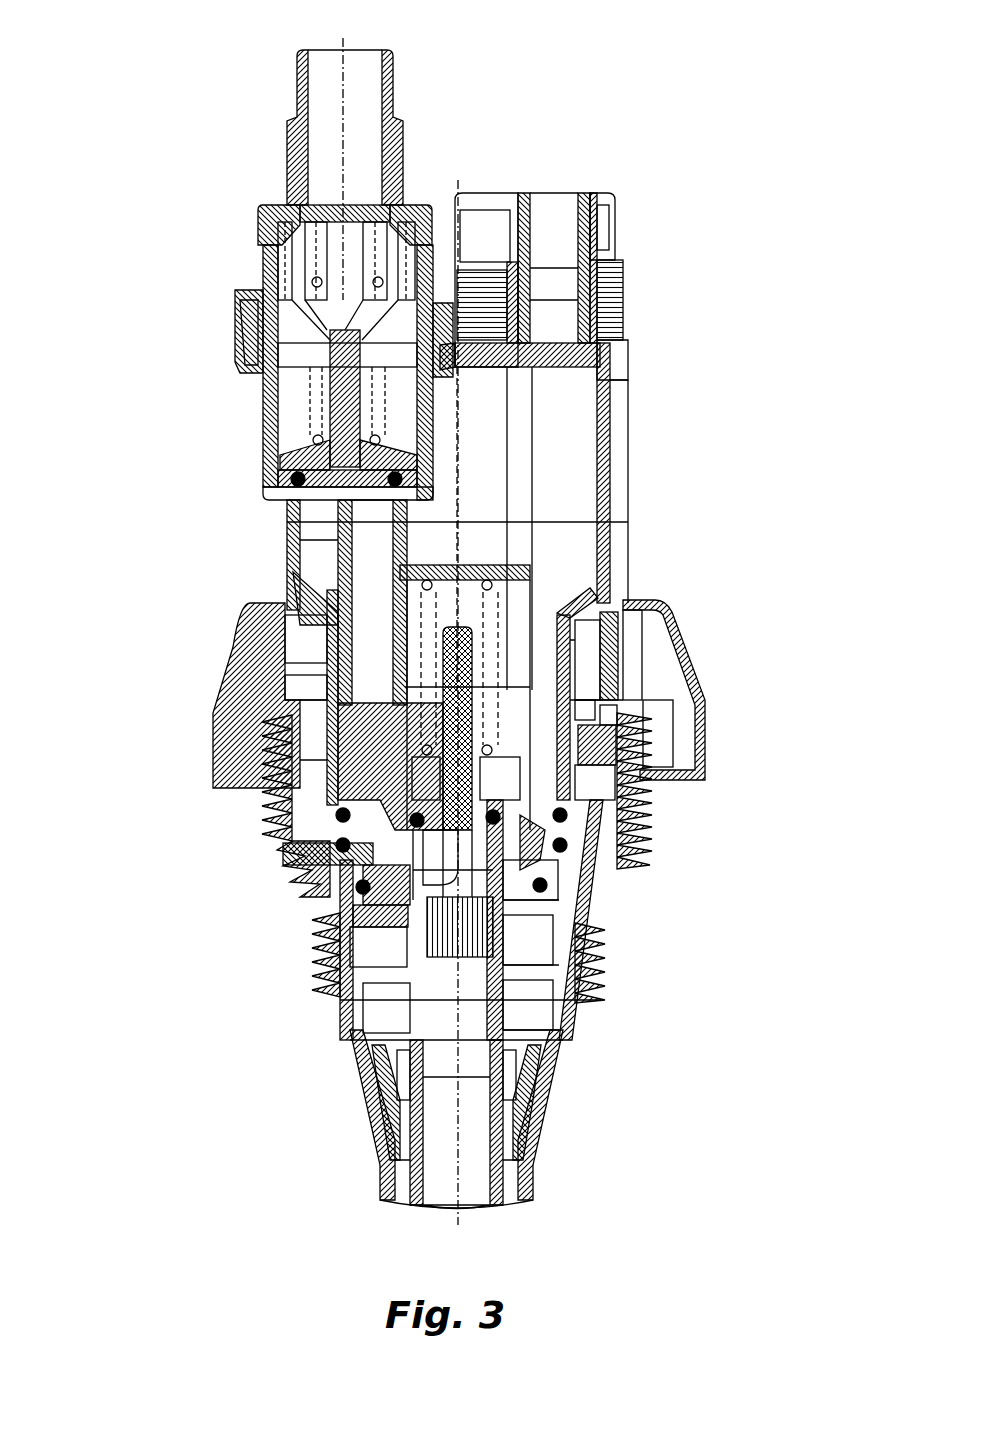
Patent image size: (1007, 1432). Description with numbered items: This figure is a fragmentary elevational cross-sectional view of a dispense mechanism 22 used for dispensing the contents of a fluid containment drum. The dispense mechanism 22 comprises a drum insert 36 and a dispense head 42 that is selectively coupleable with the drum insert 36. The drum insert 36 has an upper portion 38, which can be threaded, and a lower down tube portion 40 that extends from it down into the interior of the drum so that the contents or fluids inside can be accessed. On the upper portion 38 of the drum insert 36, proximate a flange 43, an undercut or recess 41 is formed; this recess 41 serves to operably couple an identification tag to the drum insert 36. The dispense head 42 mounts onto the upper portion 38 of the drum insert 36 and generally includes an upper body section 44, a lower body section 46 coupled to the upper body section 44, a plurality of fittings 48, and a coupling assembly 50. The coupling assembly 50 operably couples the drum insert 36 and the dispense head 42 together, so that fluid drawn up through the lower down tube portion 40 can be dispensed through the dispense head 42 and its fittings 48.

The dispense mechanism 22 is at (628, 136).
The drum insert 36 is at (577, 1078).
The upper portion 38 is at (260, 822).
The lower down tube portion 40 is at (560, 1145).
The undercut or recess 41 is at (282, 865).
The dispense head 42 is at (642, 323).
The flange 43 is at (275, 852).
The upper body section 44 is at (622, 468).
The lower body section 46 is at (620, 549).
The fittings 48 is at (598, 195).
The coupling assembly 50 is at (680, 650).